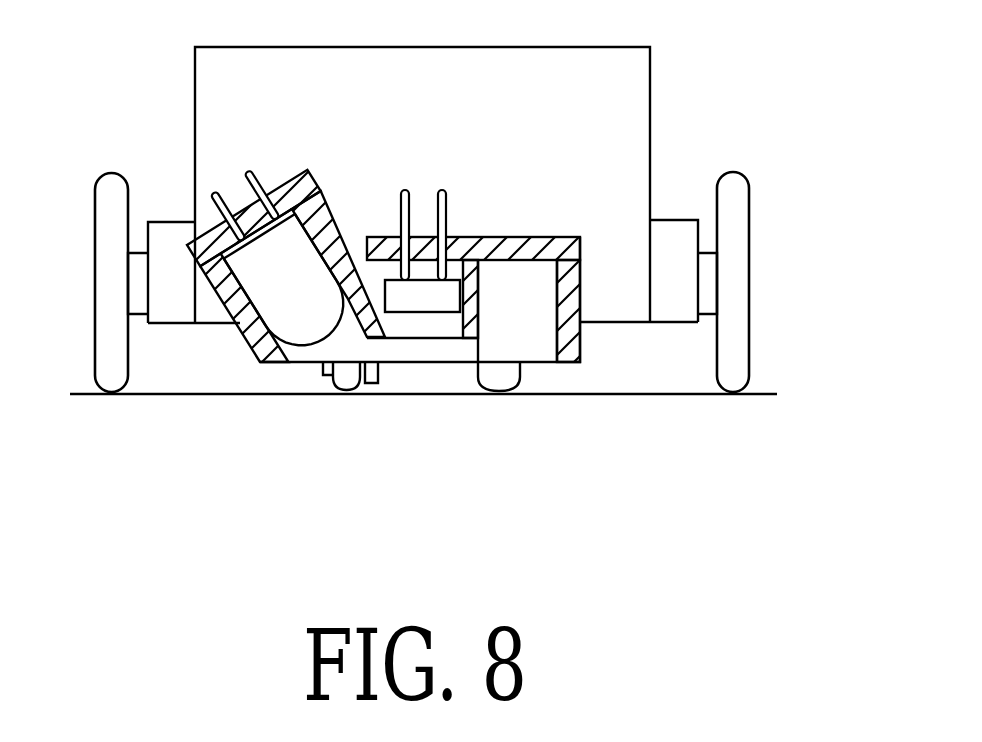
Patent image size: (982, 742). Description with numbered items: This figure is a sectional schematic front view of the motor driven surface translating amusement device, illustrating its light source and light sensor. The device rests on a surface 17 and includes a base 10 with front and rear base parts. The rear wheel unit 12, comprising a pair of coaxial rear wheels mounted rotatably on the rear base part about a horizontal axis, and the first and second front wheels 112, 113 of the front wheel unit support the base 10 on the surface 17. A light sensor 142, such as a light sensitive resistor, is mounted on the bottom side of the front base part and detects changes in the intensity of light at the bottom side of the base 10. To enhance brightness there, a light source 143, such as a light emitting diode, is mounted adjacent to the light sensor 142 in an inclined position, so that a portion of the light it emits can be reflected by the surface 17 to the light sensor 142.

The base 10 is at (670, 225).
The rear wheel unit 12 is at (733, 335).
The surface 17 is at (93, 395).
The first front wheel 112 is at (327, 380).
The second front wheel 113 is at (507, 368).
The light sensor 142 is at (421, 297).
The light source 143 is at (283, 283).